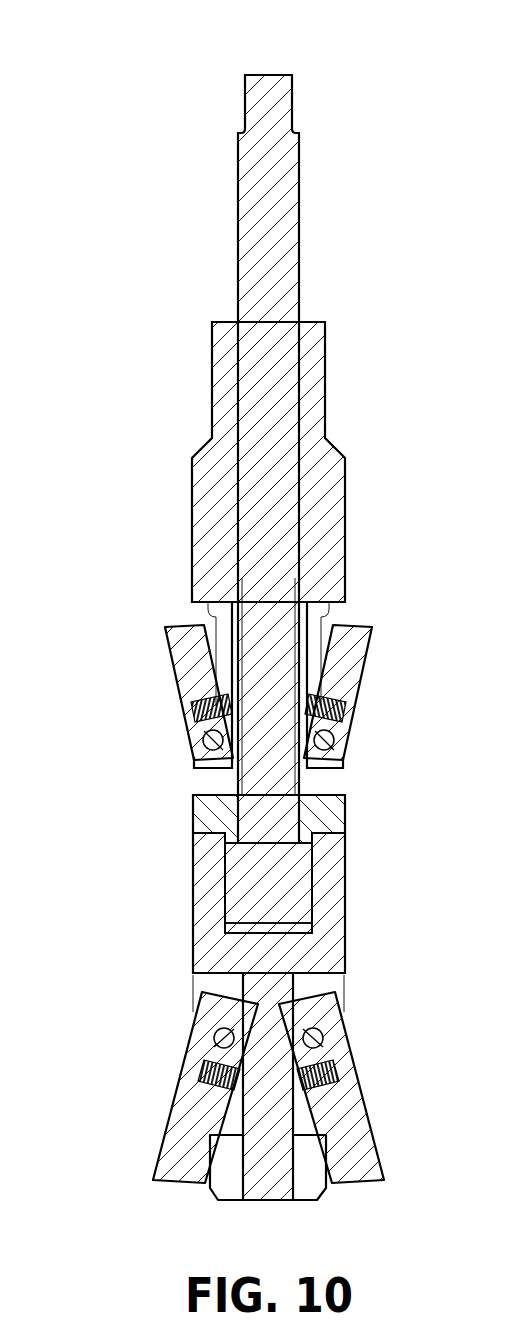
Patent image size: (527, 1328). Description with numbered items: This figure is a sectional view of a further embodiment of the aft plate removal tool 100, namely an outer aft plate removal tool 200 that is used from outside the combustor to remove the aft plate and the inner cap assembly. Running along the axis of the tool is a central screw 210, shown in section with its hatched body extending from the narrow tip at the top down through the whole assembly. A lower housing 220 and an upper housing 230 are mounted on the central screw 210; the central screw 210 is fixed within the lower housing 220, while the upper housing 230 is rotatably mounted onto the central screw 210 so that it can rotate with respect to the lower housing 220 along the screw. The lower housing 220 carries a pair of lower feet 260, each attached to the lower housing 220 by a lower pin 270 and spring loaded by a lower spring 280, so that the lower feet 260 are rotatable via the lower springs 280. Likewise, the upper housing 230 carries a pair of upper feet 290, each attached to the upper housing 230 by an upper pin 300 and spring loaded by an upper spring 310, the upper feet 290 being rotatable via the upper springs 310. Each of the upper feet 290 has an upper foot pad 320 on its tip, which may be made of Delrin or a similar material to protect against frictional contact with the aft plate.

The aft plate removal tool 100 is at (270, 603).
The outer aft plate removal tool 200 is at (331, 637).
The central screw 210 is at (298, 263).
The lower housing 220 is at (345, 877).
The upper housing 230 is at (338, 450).
The lower feet 260 is at (380, 1127).
The lower pin 270 is at (318, 1040).
The lower spring 280 is at (336, 1072).
The upper feet 290 is at (372, 657).
The upper pin 300 is at (333, 748).
The upper spring 310 is at (357, 707).
The upper foot pad 320 is at (355, 618).